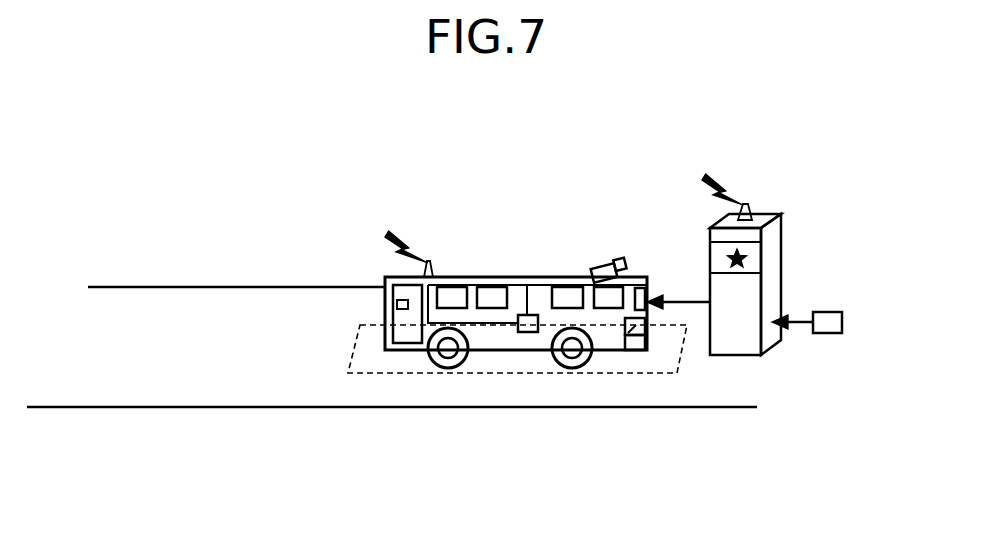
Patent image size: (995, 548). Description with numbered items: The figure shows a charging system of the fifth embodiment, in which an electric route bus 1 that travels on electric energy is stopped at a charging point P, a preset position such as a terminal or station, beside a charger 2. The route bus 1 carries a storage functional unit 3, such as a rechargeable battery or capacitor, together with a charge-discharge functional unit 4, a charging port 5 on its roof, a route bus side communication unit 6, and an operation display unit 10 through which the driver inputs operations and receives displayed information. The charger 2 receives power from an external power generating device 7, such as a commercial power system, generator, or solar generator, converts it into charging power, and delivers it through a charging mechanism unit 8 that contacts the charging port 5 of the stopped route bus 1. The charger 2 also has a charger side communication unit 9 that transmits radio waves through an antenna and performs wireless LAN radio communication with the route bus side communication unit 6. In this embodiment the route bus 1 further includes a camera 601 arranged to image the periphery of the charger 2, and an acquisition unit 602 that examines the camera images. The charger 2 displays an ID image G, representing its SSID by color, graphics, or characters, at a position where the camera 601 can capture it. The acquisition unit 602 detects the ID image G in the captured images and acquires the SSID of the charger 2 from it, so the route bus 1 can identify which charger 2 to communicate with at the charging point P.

The route bus 1 is at (468, 277).
The charger 2 is at (774, 296).
The storage functional unit 3 is at (633, 343).
The charge-discharge functional unit 4 is at (623, 335).
The charging port 5 is at (641, 288).
The route bus side communication unit 6 is at (429, 260).
The external power generating device 7 is at (842, 322).
The charging mechanism unit 8 is at (675, 300).
The charger side communication unit 9 is at (744, 203).
The operation display unit 10 is at (397, 305).
The camera 601 is at (598, 263).
The acquisition unit 602 is at (525, 333).
The ID image G is at (752, 258).
The charging point P is at (370, 373).